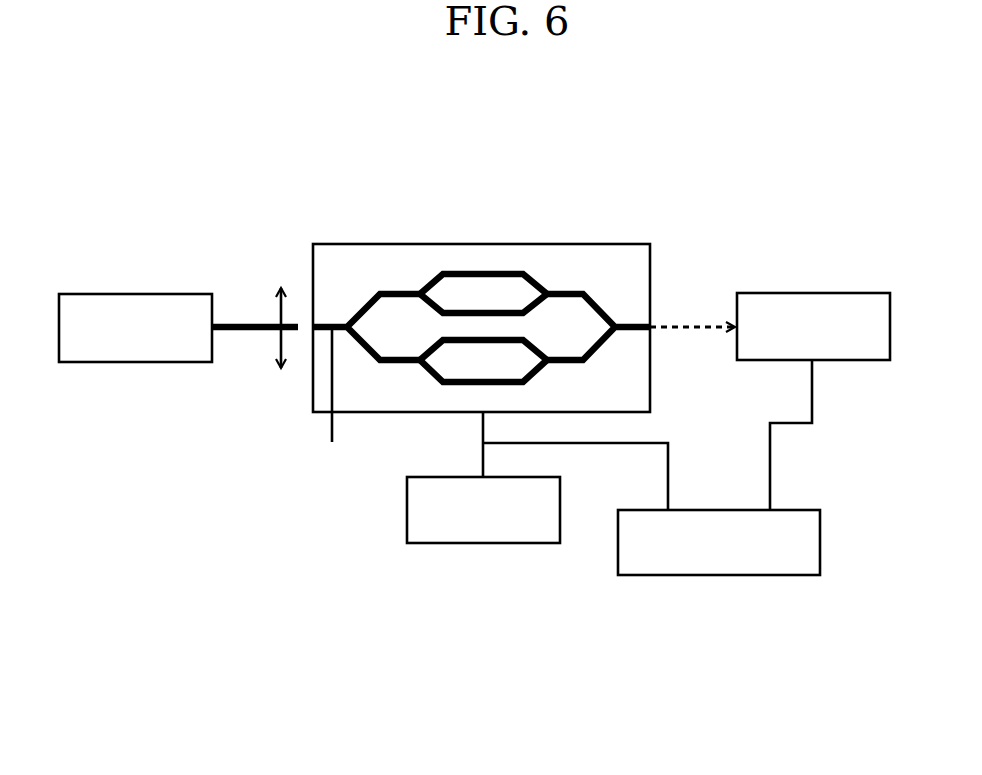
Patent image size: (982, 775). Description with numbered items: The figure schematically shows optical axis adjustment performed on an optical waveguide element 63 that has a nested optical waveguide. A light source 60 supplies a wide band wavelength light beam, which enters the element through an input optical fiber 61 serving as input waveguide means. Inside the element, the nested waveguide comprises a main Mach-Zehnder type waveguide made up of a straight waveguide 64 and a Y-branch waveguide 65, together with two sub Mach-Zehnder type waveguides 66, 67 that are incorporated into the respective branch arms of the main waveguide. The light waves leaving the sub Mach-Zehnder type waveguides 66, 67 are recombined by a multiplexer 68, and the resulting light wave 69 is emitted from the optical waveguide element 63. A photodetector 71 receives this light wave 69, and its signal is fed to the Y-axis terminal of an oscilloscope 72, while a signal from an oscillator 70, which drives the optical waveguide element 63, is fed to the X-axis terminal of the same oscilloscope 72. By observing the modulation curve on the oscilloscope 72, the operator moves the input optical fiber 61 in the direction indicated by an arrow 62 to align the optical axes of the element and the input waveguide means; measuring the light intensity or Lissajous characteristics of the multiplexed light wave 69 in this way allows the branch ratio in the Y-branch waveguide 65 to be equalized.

The light source 60 is at (127, 345).
The input optical fiber 61 is at (244, 322).
The arrow 62 is at (278, 340).
The optical waveguide element 63 is at (483, 225).
The straight waveguide 64 is at (329, 403).
The Y-branch waveguide 65 is at (342, 320).
The sub Mach-Zehnder type waveguide 66 is at (442, 263).
The sub Mach-Zehnder type waveguide 67 is at (421, 382).
The multiplexer 68 is at (623, 311).
The light wave 69 is at (685, 325).
The oscillator 70 is at (483, 527).
The photodetector 71 is at (822, 310).
The oscilloscope 72 is at (737, 560).